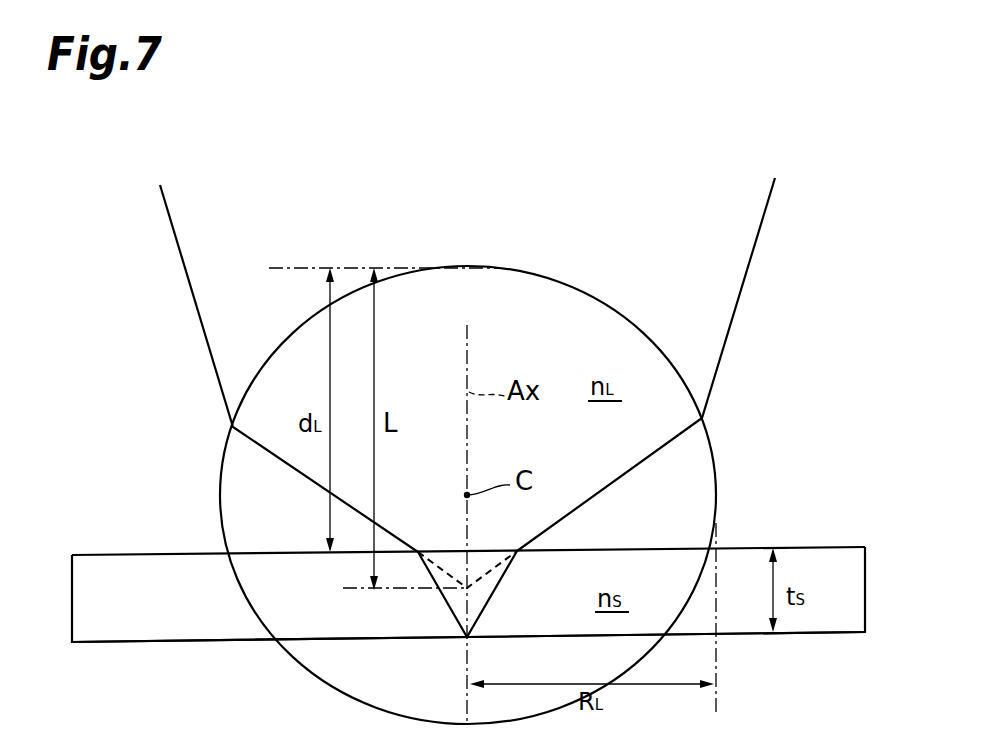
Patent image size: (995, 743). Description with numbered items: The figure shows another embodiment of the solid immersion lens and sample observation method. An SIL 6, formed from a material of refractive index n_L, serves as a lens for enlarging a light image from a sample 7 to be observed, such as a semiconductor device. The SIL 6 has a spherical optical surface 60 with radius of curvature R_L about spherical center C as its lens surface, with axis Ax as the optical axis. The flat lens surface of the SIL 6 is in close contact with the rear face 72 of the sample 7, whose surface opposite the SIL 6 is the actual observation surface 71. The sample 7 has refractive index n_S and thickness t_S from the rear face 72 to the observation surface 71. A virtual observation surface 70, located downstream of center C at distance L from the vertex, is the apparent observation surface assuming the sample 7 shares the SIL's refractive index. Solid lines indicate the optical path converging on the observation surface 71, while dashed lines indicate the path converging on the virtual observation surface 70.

The SIL 6 is at (716, 465).
The spherical optical surface 60 is at (593, 293).
The sample 7 is at (103, 610).
The virtual observation surface 70 is at (407, 592).
The observation surface 71 is at (332, 640).
The rear face 72 is at (112, 555).